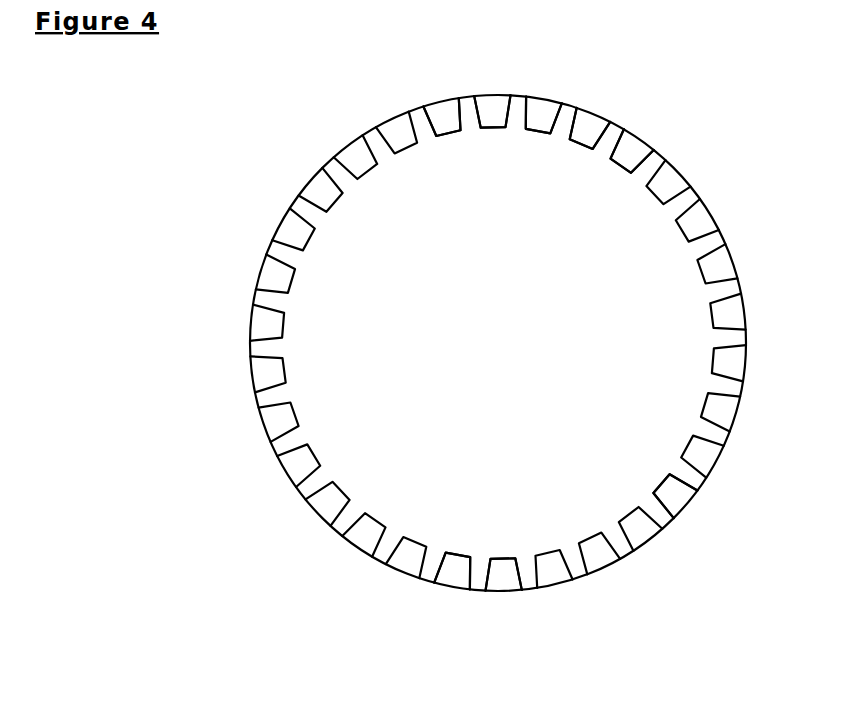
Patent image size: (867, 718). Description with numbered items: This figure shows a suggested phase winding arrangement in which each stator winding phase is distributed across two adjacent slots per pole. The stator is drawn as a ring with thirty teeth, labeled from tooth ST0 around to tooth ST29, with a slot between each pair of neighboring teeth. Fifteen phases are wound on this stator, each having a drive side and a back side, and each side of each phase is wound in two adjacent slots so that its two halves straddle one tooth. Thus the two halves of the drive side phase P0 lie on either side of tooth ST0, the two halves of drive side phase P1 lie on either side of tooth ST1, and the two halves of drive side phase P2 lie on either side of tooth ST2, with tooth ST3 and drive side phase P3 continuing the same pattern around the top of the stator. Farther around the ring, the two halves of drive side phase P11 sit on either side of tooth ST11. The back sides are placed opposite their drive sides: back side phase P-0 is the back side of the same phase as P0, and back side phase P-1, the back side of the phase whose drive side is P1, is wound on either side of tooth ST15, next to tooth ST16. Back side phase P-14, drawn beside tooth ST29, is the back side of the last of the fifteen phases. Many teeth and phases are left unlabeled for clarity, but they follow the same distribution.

The stator tooth ST0 is at (502, 89).
The stator tooth ST1 is at (560, 86).
The stator tooth ST2 is at (616, 112).
The stator tooth ST3 is at (655, 134).
The stator tooth ST11 is at (702, 517).
The stator tooth ST15 is at (522, 596).
The stator tooth ST16 is at (448, 607).
The stator tooth ST29 is at (424, 93).
The drive side phase P0 is at (511, 117).
The drive side phase P1 is at (557, 125).
The drive side phase P2 is at (601, 142).
The drive side phase P3 is at (641, 168).
The drive side phase P11 is at (680, 476).
The back side phase P-0 is at (521, 568).
The back side phase P-1 is at (474, 568).
The back side phase P-14 is at (463, 120).